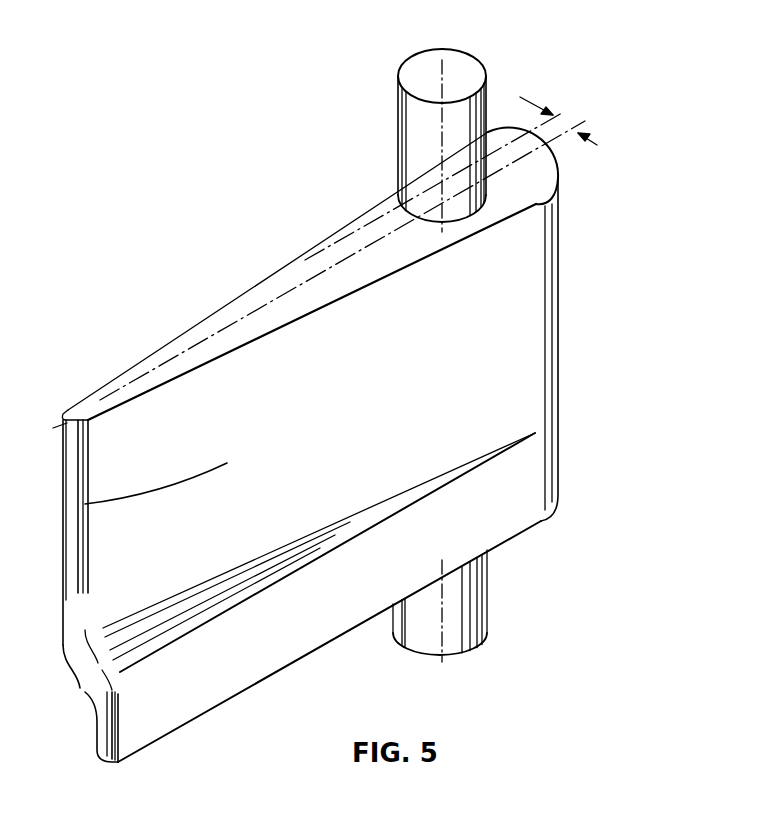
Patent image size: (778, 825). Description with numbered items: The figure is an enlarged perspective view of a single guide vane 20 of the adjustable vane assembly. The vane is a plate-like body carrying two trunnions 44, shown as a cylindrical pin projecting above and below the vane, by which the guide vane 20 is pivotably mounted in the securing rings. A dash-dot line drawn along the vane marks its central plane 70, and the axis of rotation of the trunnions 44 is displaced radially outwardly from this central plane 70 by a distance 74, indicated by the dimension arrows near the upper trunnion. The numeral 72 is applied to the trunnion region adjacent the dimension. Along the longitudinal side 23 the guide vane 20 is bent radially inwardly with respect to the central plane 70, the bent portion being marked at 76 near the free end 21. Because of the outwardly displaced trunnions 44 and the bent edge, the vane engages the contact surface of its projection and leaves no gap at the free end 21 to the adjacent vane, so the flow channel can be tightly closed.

The guide vane 20 is at (85, 504).
The free end 21 is at (78, 457).
The longitudinal side 23 is at (193, 722).
The trunnion 44 is at (433, 60).
The central plane 70 is at (161, 362).
The cylindrical boss 72 is at (443, 128).
The distance 74 is at (566, 121).
The bent tip 76 is at (104, 722).